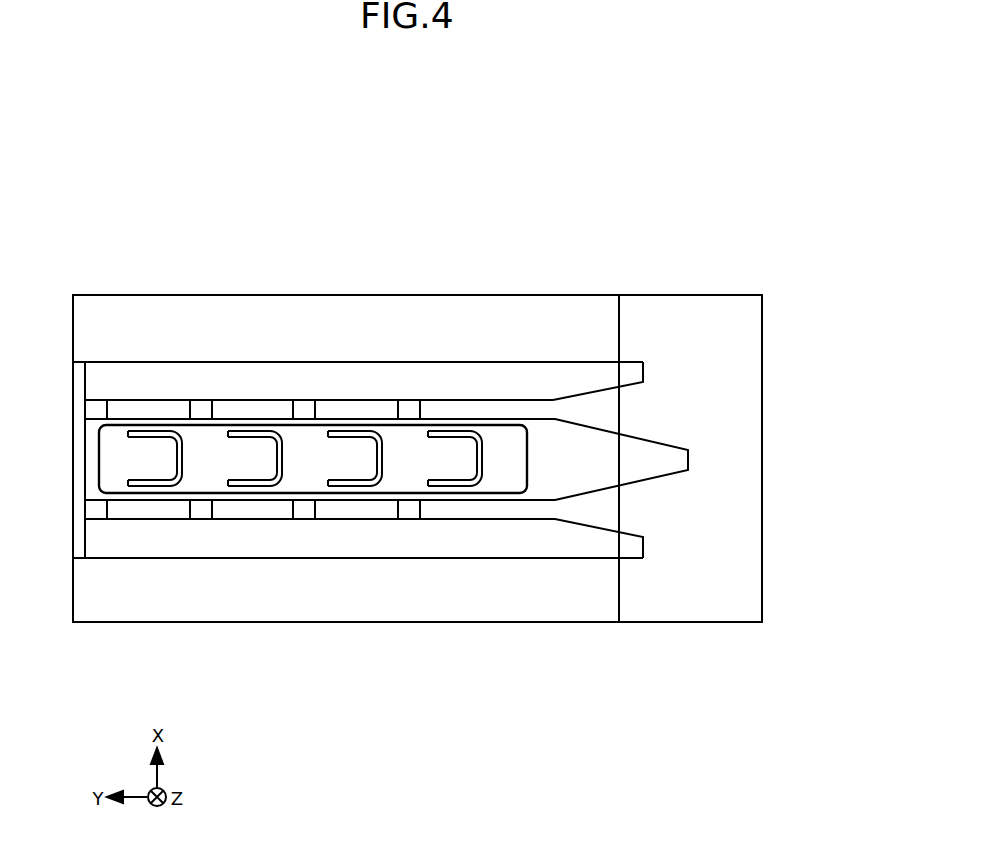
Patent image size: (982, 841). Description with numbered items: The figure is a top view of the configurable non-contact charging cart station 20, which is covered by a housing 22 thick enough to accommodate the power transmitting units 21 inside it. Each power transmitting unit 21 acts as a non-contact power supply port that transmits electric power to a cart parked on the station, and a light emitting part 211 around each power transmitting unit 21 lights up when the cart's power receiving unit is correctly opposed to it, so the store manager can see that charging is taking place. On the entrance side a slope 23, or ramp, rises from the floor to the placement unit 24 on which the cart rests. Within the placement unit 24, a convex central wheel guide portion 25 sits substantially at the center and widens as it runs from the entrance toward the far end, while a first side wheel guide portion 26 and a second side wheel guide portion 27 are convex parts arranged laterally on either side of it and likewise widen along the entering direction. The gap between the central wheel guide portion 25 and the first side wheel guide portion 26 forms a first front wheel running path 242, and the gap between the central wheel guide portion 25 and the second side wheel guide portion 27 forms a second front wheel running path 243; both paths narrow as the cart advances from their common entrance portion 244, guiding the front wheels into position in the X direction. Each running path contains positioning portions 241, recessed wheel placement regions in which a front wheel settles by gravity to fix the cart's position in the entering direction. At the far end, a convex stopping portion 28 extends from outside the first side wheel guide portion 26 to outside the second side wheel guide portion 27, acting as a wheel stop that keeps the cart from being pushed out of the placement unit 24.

The configurable non-contact charging cart station 20 is at (597, 170).
The power transmitting unit 21 is at (147, 449).
The light emitting part 211 is at (148, 483).
The housing 22 is at (85, 329).
The slope 23 is at (686, 342).
The placement unit 24 is at (208, 199).
The positioning portion 241 is at (97, 406).
The first front wheel running path 242 is at (498, 508).
The second front wheel running path 243 is at (485, 408).
The entrance portion 244 is at (768, 468).
The central wheel guide portion 25 is at (583, 472).
The first side wheel guide portion 26 is at (523, 547).
The second side wheel guide portion 27 is at (507, 382).
The stopping portion 28 is at (80, 470).